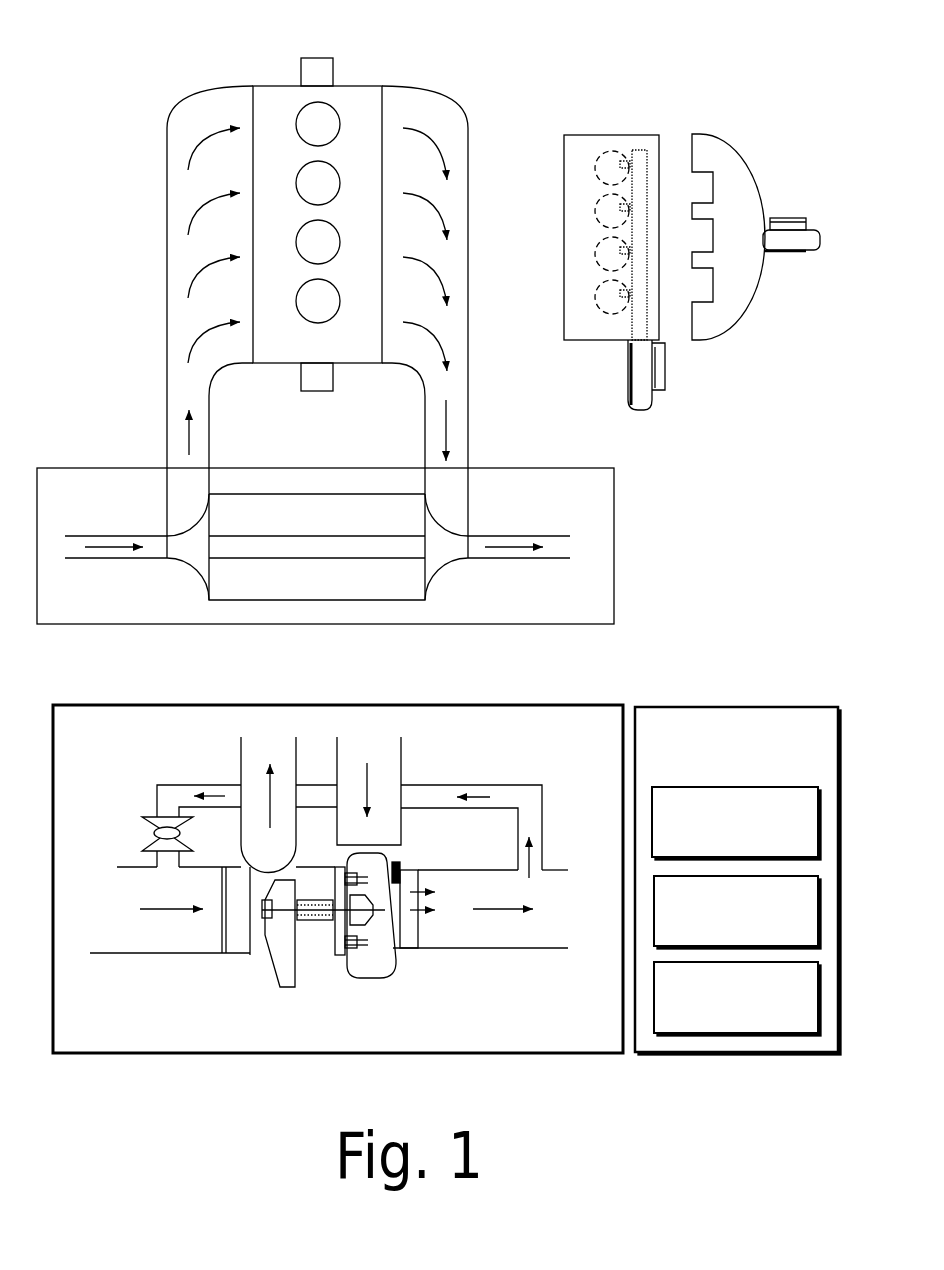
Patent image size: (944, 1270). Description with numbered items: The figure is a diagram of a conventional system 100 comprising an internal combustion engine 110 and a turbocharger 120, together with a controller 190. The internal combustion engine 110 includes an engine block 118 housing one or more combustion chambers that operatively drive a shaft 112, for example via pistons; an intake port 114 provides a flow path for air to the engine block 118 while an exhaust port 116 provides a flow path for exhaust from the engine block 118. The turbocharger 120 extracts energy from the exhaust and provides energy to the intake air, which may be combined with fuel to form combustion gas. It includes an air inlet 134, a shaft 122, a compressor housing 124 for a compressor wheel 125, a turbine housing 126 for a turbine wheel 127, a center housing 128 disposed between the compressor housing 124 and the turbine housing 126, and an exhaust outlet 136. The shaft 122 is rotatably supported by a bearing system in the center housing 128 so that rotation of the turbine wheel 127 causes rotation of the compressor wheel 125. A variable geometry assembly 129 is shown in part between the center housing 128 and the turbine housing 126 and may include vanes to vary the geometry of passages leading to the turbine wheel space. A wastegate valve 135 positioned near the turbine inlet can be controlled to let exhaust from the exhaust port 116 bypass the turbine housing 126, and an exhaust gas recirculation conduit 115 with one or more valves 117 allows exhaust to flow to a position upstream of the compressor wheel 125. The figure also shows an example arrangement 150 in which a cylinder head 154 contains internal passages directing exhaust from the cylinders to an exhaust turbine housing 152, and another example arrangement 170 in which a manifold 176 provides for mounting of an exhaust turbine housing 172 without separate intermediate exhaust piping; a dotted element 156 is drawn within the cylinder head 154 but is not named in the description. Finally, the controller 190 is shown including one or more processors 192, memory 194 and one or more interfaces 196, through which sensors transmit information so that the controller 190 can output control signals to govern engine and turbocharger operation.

The conventional system 100 is at (462, 34).
The internal combustion engine 110 is at (285, 85).
The shaft 112 is at (320, 58).
The intake port 114 is at (185, 100).
The exhaust gas recirculation conduit 115 is at (168, 784).
The exhaust port 116 is at (448, 100).
The valve 117 is at (152, 817).
The engine block 118 is at (336, 356).
The turbocharger 120 is at (518, 468).
The shaft 122 is at (315, 560).
The compressor housing 124 is at (193, 570).
The compressor wheel 125 is at (285, 937).
The turbine housing 126 is at (445, 558).
The turbine wheel 127 is at (393, 965).
The center housing 128 is at (341, 522).
The variable geometry assembly 129 is at (338, 960).
The air inlet 134 is at (133, 534).
The wastegate valve 135 is at (400, 860).
The exhaust outlet 136 is at (518, 535).
The example arrangement 150 is at (606, 118).
The exhaust turbine housing 152 is at (624, 367).
The cylinder head 154 is at (562, 212).
The sensor strip 156 is at (641, 150).
The example arrangement 170 is at (742, 130).
The exhaust turbine housing 172 is at (790, 252).
The manifold 176 is at (748, 300).
The controller 190 is at (718, 773).
The processors 192 is at (736, 823).
The memory 194 is at (718, 931).
The interfaces 196 is at (718, 1018).